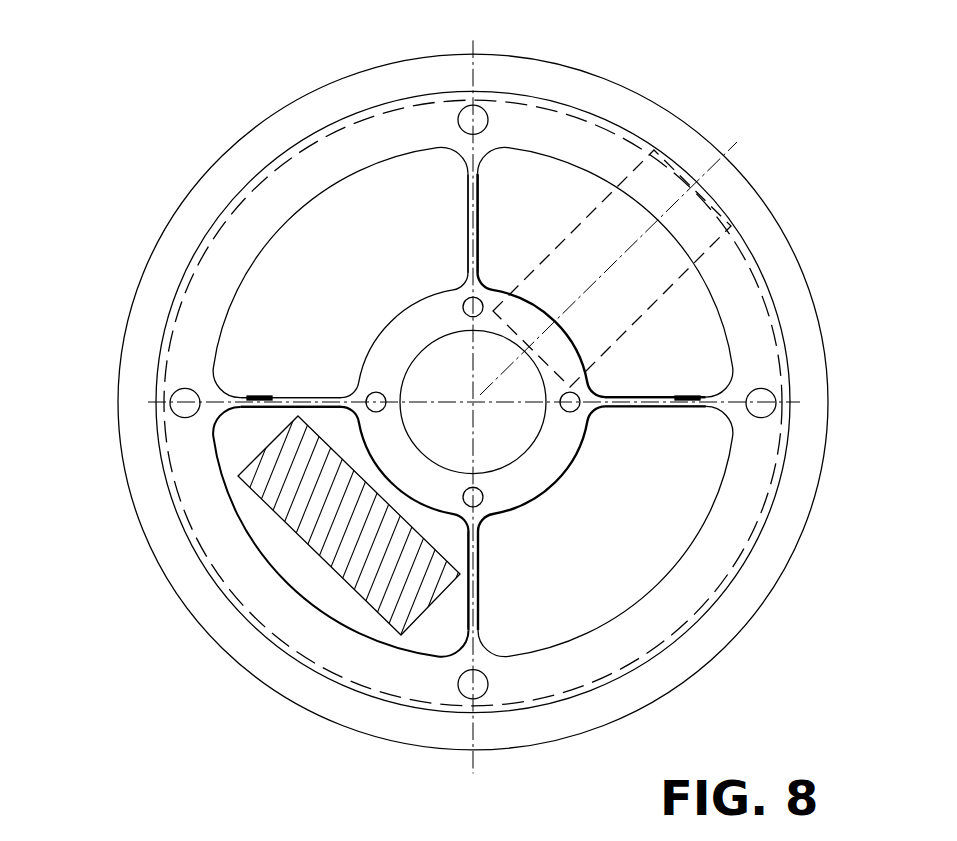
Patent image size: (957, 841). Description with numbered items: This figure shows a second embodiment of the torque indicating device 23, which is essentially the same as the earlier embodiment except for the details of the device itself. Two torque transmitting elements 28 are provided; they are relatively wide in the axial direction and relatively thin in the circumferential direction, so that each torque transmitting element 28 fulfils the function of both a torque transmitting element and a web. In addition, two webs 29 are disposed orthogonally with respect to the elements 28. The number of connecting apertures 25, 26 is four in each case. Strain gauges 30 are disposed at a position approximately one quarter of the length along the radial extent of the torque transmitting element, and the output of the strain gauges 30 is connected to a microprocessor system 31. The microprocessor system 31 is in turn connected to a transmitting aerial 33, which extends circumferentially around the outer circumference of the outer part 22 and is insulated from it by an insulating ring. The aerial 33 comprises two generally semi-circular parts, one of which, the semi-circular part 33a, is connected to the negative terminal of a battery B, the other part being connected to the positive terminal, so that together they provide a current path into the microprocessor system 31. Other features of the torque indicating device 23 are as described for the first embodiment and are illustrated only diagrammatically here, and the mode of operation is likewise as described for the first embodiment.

The outer part 22 is at (605, 147).
The torque indicating device 23 is at (291, 105).
The connecting apertures 25 is at (489, 120).
The connecting apertures 26 is at (376, 402).
The torque transmitting elements 28 is at (297, 400).
The webs 29 is at (478, 203).
The strain gauges 30 is at (253, 397).
The microprocessor system 31 is at (326, 537).
The transmitting aerial 33 is at (827, 448).
The semi-circular part of aerial 33a is at (118, 386).
The battery B is at (688, 288).